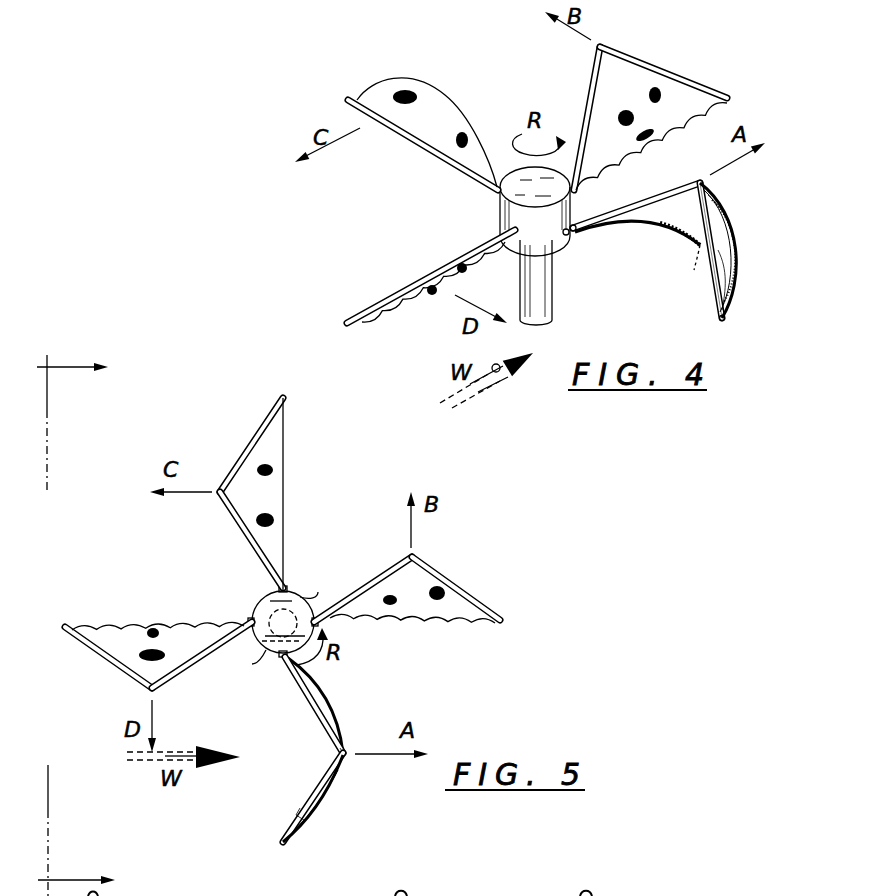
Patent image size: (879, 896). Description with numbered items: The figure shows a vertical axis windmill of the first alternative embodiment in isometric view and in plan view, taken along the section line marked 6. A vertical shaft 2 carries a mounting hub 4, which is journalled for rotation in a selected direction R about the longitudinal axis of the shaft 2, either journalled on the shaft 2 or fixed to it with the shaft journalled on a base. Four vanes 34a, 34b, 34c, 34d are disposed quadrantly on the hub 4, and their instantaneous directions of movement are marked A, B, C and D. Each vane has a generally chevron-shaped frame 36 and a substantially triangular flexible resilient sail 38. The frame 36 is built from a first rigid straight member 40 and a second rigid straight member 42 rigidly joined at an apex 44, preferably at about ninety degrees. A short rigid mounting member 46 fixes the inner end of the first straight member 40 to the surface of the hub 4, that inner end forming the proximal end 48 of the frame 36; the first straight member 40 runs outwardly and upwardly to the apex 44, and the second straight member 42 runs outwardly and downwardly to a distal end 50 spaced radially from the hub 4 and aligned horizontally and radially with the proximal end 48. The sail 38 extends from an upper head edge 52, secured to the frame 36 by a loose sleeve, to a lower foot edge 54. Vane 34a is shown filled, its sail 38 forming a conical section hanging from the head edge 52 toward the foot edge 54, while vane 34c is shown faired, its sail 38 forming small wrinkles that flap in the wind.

In FIG. 4, the vertical shaft 2 is at (525, 282).
In FIG. 4, the mounting hub 4 is at (503, 205).
In FIG. 5, the mounting hub 4 is at (262, 598).
In FIG. 5, the section line 6- 6 is at (76, 613).
In FIG. 4, the vane 34a is at (728, 254).
In FIG. 5, the vane 34a is at (325, 806).
In FIG. 4, the vane 34b is at (642, 78).
In FIG. 5, the vane 34b is at (437, 582).
In FIG. 4, the vane 34c is at (397, 82).
In FIG. 5, the vane 34c is at (262, 448).
In FIG. 4, the vane 34d is at (436, 280).
In FIG. 5, the vane 34d is at (134, 632).
In FIG. 4, the chevron-shaped frame 36 is at (660, 200).
In FIG. 5, the chevron-shaped frame 36 is at (336, 743).
In FIG. 4, the flexible resilient sail 38 is at (693, 250).
In FIG. 4, the first rigid straight member 40 is at (652, 196).
In FIG. 5, the first rigid straight member 40 is at (303, 708).
In FIG. 4, the second rigid straight member 42 is at (723, 286).
In FIG. 5, the second rigid straight member 42 is at (300, 812).
In FIG. 4, the apex 44 is at (704, 184).
In FIG. 5, the apex 44 is at (336, 758).
In FIG. 4, the short rigid mounting member 46 is at (563, 235).
In FIG. 5, the short rigid mounting member 46 is at (297, 595).
In FIG. 4, the proximal end 48 is at (573, 225).
In FIG. 4, the distal end 50 is at (721, 321).
In FIG. 4, the upper head edge 52 is at (716, 228).
In FIG. 4, the lower foot edge 54 is at (658, 228).
In FIG. 5, the lower foot edge 54 is at (286, 480).